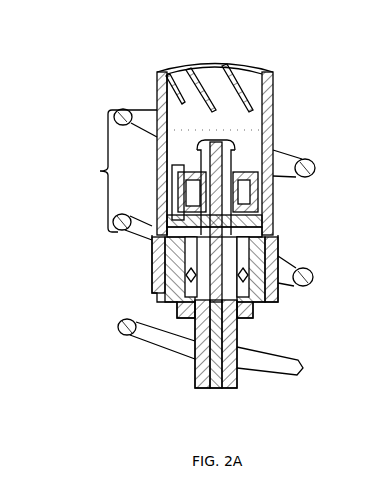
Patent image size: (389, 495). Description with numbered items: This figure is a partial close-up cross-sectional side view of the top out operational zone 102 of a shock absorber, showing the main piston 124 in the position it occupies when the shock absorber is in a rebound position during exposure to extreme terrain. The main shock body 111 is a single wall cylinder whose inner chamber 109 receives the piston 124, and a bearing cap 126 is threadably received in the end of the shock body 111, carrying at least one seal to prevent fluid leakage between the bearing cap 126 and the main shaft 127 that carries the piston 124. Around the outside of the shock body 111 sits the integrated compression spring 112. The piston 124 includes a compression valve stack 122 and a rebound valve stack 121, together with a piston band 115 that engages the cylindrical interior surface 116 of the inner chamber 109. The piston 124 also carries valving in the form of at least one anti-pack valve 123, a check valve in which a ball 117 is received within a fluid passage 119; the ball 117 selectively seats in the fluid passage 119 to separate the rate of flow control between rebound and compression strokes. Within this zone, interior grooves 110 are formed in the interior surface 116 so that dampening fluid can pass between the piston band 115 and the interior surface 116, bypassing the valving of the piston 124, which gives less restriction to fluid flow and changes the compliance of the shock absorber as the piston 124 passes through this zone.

The top out operational zone 102 is at (100, 171).
The inner chamber 109 is at (250, 133).
The interior grooves 110 is at (219, 68).
The main shock body 111 is at (270, 105).
The compression spring 112 is at (292, 260).
The piston band 115 is at (170, 200).
The interior surface 116 is at (167, 146).
The ball 117 is at (235, 211).
The fluid passage 119 is at (240, 232).
The rebound valve stack 121 is at (180, 175).
The compression valve stack 122 is at (157, 227).
The anti-pack valve 123 is at (272, 196).
The main piston 124 is at (275, 166).
The bearing cap 126 is at (262, 305).
The main shaft 127 is at (238, 378).